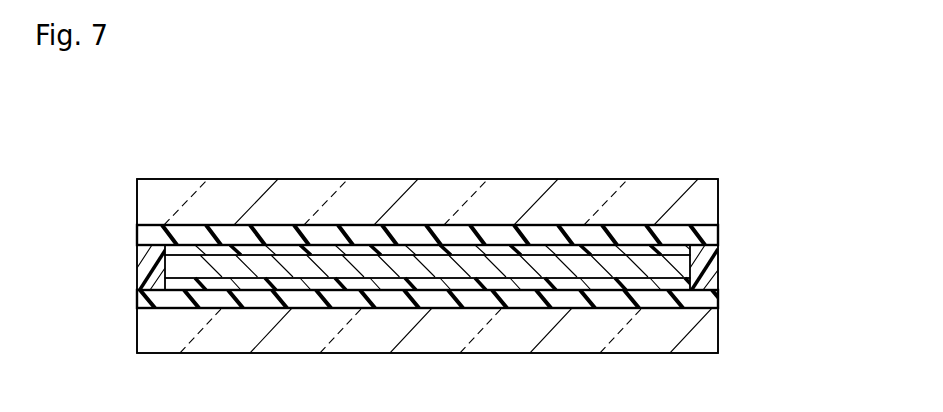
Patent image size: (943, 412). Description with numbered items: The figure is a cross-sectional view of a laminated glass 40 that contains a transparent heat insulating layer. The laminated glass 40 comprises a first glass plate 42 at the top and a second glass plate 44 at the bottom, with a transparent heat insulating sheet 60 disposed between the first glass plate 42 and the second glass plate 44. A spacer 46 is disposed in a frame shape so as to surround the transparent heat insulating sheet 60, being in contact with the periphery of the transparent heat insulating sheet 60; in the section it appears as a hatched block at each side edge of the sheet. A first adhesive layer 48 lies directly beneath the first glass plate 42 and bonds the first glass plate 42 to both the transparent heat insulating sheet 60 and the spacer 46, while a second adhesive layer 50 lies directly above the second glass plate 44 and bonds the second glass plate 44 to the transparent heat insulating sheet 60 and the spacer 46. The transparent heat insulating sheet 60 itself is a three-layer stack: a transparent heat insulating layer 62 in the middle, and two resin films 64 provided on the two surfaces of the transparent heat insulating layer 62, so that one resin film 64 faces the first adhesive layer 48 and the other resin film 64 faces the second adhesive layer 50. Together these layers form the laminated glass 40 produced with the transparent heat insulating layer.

The laminated glass 40 is at (455, 157).
The first glass plate 42 is at (714, 205).
The second glass plate 44 is at (710, 337).
The spacer 46 is at (140, 265).
The first adhesive layer 48 is at (710, 235).
The second adhesive layer 50 is at (712, 308).
The transparent heat insulating sheet 60 is at (771, 235).
The transparent heat insulating layer 62 is at (682, 266).
The resin film 64 is at (680, 252).